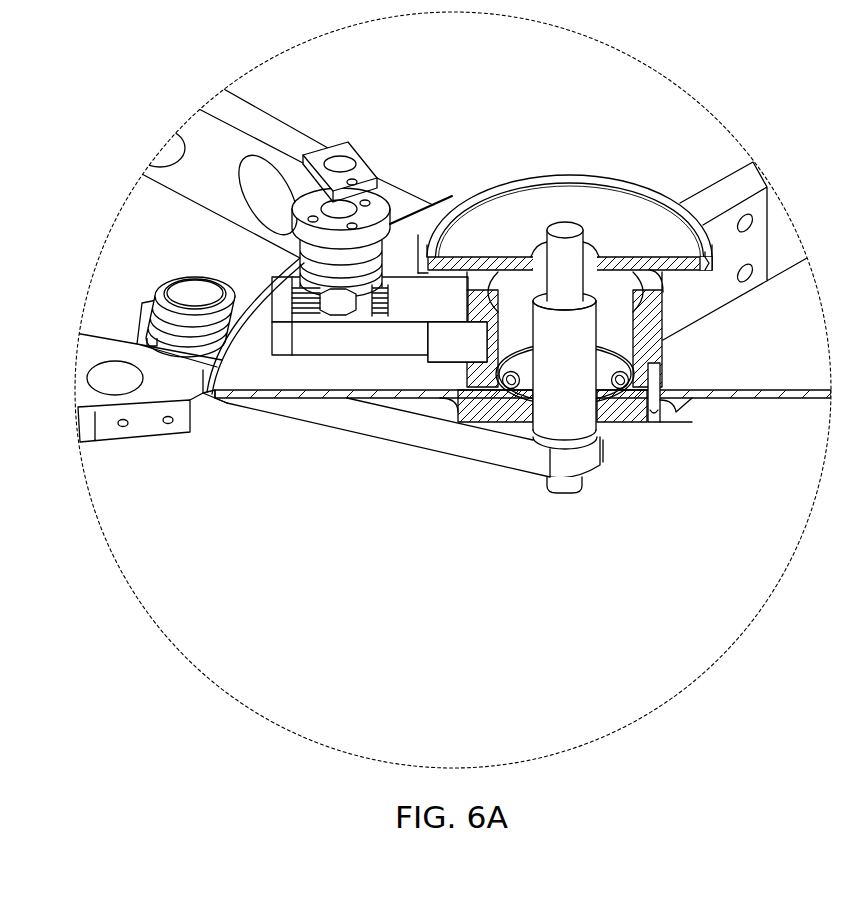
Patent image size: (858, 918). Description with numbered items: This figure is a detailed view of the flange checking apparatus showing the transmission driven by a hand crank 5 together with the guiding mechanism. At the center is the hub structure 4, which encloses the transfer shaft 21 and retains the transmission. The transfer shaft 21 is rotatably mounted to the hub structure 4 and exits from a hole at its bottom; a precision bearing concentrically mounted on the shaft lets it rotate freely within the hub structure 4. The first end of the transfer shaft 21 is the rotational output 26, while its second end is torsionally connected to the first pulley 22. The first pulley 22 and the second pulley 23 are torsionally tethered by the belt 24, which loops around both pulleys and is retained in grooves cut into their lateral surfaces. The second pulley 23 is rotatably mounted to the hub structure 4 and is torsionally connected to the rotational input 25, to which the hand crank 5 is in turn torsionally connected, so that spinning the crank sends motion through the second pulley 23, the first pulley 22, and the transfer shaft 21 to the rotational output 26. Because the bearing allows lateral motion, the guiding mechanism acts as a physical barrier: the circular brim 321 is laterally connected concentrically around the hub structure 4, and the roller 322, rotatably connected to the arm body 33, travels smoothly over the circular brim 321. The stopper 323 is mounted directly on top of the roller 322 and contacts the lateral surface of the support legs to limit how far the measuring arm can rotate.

The hub structure 4 is at (663, 340).
The hand crank 5 is at (340, 146).
The transfer shaft 21 is at (585, 356).
The first pulley 22 is at (273, 276).
The second pulley 23 is at (553, 178).
The belt 24 is at (430, 205).
The rotational input 25 is at (337, 305).
The rotational output 26 is at (567, 497).
The arm body 33 is at (398, 430).
The circular brim 321 is at (255, 305).
The roller 322 is at (150, 336).
The stopper 323 is at (188, 280).